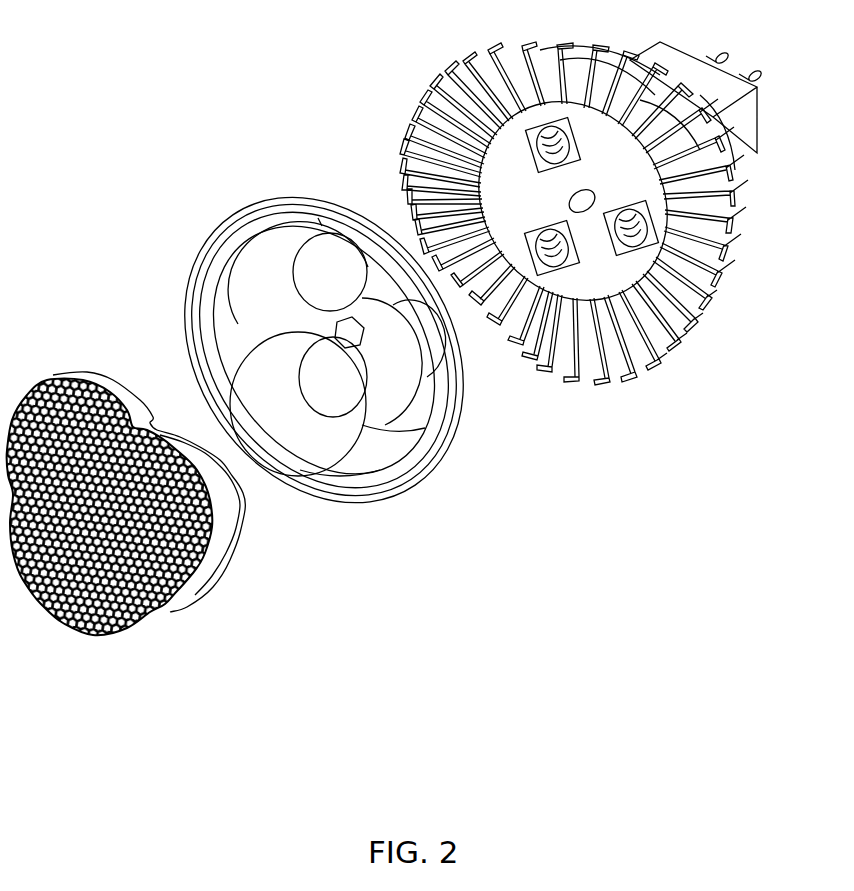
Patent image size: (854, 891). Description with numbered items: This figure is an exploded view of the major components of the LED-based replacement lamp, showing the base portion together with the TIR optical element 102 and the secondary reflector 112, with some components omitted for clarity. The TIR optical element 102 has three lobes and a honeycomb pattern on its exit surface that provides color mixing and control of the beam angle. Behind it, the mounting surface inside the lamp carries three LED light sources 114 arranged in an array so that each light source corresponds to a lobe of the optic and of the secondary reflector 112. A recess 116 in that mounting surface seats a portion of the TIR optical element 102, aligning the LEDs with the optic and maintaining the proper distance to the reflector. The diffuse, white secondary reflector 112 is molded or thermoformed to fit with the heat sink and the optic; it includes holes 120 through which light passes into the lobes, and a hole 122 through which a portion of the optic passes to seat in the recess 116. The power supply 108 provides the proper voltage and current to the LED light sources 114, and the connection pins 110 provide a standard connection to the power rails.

The TIR optical element 102 is at (56, 378).
The power supply 108 is at (740, 160).
The connection pins 110 is at (727, 58).
The secondary reflector 112 is at (223, 227).
The LED light sources 114 is at (620, 240).
The recess 116 is at (585, 192).
The holes 120 is at (353, 387).
The hole 122 is at (337, 330).